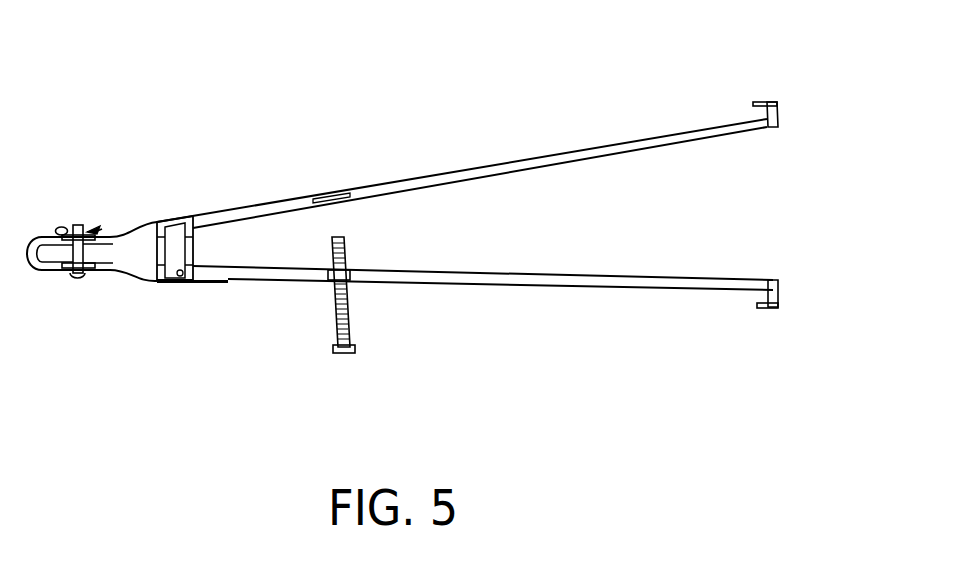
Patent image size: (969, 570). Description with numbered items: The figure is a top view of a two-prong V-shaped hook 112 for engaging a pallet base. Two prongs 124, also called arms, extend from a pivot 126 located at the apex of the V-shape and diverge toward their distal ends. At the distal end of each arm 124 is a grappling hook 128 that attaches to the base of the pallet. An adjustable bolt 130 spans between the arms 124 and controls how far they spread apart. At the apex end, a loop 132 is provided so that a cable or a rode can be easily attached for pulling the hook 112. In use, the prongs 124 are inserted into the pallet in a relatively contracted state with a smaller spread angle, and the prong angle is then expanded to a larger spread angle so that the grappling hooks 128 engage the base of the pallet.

The two-prong V-shaped hook 112 is at (138, 162).
The prongs 124 is at (420, 176).
The pivot 126 is at (183, 272).
The grappling hook 128 is at (778, 293).
The adjustable bolt 130 is at (333, 349).
The loop 132 is at (37, 273).